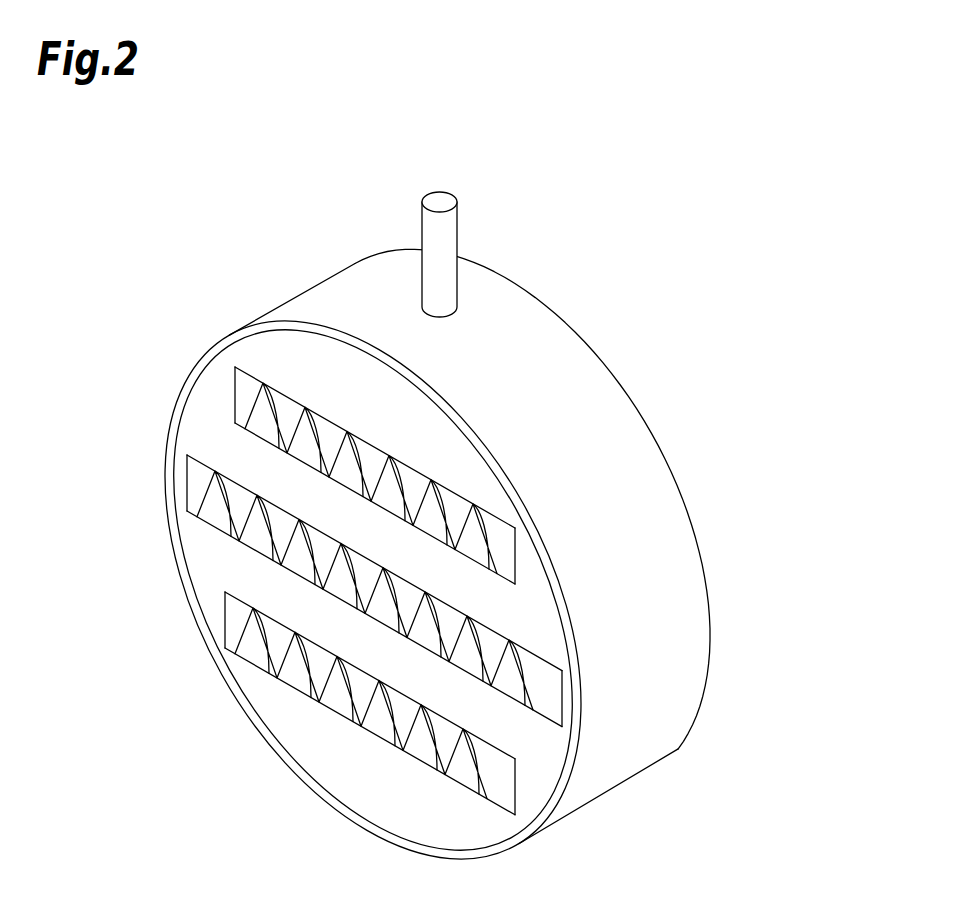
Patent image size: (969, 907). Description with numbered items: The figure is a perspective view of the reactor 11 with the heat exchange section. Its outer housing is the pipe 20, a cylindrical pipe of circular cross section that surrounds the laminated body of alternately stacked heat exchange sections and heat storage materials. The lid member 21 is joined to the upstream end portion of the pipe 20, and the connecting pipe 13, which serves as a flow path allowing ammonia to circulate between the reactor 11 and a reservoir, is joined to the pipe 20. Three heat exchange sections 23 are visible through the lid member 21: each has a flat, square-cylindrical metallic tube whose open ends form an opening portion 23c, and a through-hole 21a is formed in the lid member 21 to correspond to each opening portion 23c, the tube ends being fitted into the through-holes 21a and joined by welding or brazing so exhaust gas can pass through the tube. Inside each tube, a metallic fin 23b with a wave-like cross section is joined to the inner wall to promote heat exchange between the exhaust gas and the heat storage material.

The reactor with the heat exchange section 11 is at (235, 243).
The connecting pipe 13 is at (445, 233).
The pipe 20 is at (394, 549).
The lid member 21 is at (310, 373).
The through-hole 21a is at (375, 456).
The heat exchange section 23 is at (226, 384).
The fin 23b is at (505, 540).
The opening portion 23c is at (268, 430).